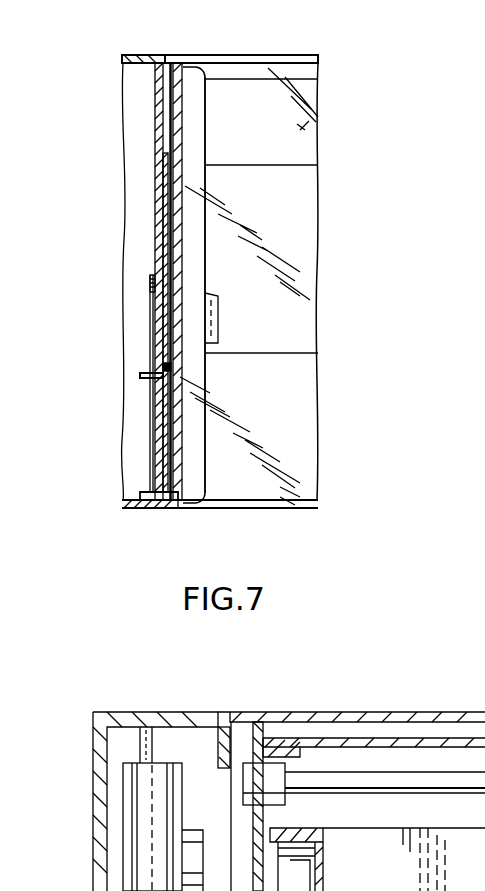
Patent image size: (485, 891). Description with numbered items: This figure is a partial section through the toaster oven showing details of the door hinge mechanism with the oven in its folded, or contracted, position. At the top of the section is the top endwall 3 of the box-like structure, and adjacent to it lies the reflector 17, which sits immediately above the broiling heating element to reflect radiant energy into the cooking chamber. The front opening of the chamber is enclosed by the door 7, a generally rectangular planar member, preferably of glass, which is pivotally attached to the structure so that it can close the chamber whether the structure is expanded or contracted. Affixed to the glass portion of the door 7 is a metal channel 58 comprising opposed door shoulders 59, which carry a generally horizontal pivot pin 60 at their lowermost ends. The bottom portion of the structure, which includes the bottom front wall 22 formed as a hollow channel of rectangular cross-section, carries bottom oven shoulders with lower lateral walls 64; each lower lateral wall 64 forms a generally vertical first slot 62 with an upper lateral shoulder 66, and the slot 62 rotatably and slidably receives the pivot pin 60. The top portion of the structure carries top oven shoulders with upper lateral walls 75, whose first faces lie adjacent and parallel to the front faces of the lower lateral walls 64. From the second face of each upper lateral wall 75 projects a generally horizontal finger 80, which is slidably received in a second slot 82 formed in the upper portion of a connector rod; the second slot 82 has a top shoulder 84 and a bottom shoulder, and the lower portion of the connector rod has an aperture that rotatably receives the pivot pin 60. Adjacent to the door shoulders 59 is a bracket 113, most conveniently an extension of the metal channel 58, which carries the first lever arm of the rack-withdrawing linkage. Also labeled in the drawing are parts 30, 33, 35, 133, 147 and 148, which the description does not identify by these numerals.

In FIG. 7, the top endwall 3 is at (235, 55).
In FIG. 8, the top endwall 3 is at (385, 712).
In FIG. 7, the door 7 is at (318, 207).
In FIG. 7, the reflector 17 is at (305, 126).
In FIG. 7, the bottom front wall 22 is at (300, 432).
In FIG. 7, the housing wall 30 is at (150, 55).
In FIG. 8, the housing wall 30 is at (93, 760).
In FIG. 7, the metal channel 58 is at (205, 118).
In FIG. 7, the door shoulder 59 is at (185, 508).
In FIG. 7, the pivot pin 60 is at (150, 508).
In FIG. 7, the first slot 62 is at (168, 428).
In FIG. 7, the lower lateral wall 64 is at (157, 205).
In FIG. 7, the upper lateral shoulder 66 is at (163, 369).
In FIG. 7, the upper lateral wall 75 is at (155, 120).
In FIG. 7, the finger 80 is at (150, 384).
In FIG. 7, the second slot 82 is at (152, 333).
In FIG. 7, the top shoulder 84 is at (150, 300).
In FIG. 7, the bracket 113 is at (218, 322).
In FIG. 8, the rod 33 is at (155, 745).
In FIG. 8, the cylinder 35 is at (140, 763).
In FIG. 8, the clip 147 is at (298, 828).
In FIG. 8, the bracket 148 is at (322, 855).
In FIG. 8, the guide 133 is at (300, 890).